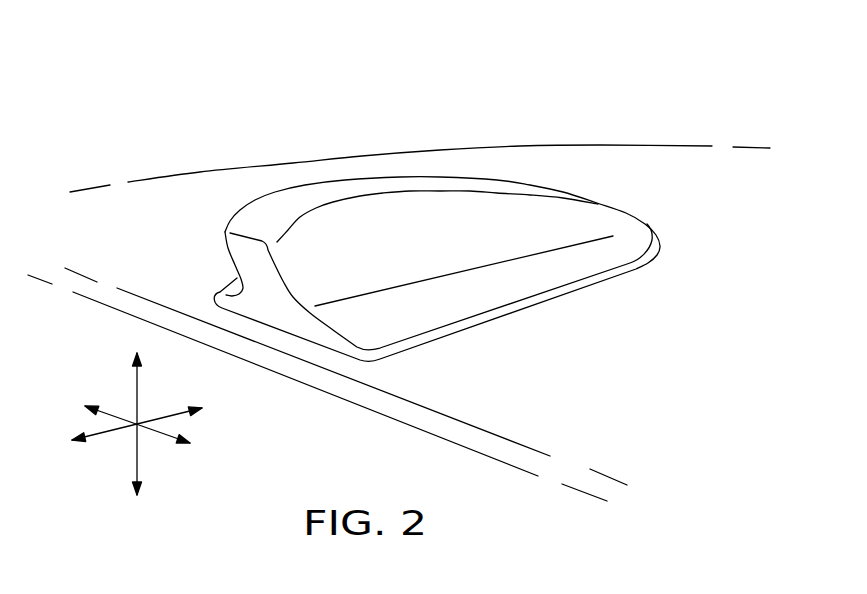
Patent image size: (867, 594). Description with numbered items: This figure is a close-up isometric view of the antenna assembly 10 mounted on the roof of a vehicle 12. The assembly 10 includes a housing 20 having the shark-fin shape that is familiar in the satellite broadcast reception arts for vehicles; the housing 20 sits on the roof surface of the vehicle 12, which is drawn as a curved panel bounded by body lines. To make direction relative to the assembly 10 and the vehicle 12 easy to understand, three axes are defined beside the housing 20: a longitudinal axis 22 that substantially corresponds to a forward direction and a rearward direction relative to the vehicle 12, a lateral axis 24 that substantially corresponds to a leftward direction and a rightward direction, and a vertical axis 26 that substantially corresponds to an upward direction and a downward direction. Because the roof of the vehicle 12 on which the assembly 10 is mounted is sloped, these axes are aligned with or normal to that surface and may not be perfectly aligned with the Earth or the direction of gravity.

The antenna assembly 10 is at (399, 273).
The vehicle 12 is at (685, 258).
The housing 20 is at (305, 195).
The longitudinal axis 22 is at (112, 410).
The lateral axis 24 is at (163, 437).
The vertical axis 26 is at (135, 455).